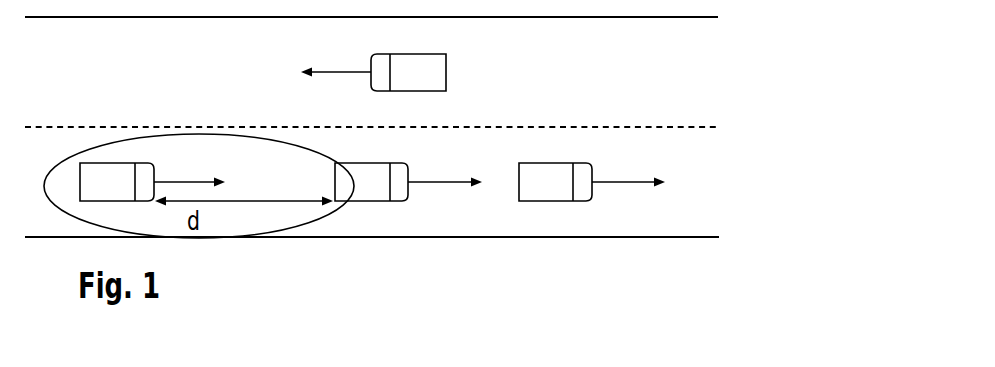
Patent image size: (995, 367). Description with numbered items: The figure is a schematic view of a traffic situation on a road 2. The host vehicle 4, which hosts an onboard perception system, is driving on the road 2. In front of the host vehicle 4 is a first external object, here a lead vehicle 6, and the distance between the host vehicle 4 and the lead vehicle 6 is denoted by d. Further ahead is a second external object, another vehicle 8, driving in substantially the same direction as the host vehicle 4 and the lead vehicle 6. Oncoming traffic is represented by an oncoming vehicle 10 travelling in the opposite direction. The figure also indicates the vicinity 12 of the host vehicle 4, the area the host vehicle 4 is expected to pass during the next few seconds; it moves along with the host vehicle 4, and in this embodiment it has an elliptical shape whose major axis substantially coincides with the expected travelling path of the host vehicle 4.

The road 2 is at (372, 127).
The host vehicle 4 is at (152, 182).
The lead vehicle 6 is at (408, 182).
The vehicle 8 is at (592, 182).
The oncoming vehicle 10 is at (373, 73).
The vicinity 12 is at (199, 186).